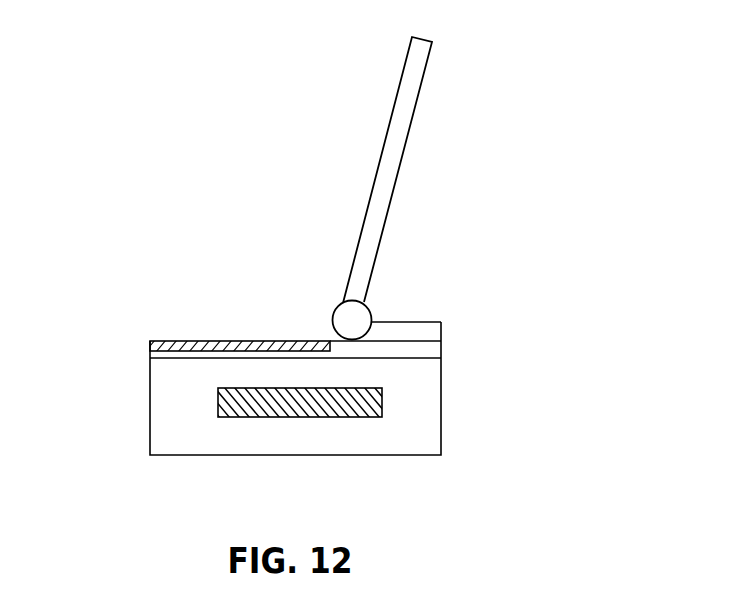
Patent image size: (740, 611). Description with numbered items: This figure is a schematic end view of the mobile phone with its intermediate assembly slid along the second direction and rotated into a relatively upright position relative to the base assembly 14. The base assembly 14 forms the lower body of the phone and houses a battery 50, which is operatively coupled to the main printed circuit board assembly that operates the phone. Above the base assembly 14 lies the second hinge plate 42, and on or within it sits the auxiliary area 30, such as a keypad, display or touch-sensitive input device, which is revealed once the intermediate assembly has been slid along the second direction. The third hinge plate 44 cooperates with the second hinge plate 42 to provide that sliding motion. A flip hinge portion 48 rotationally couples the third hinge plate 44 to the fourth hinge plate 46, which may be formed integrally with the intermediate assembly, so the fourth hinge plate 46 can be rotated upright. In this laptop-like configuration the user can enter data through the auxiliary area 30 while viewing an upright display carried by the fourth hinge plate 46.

The base assembly 14 is at (150, 440).
The auxiliary area 30 is at (172, 341).
The second hinge plate 42 is at (441, 357).
The third hinge plate 44 is at (428, 322).
The fourth hinge plate 46 is at (407, 138).
The flip hinge portion 48 is at (338, 306).
The battery 50 is at (382, 402).